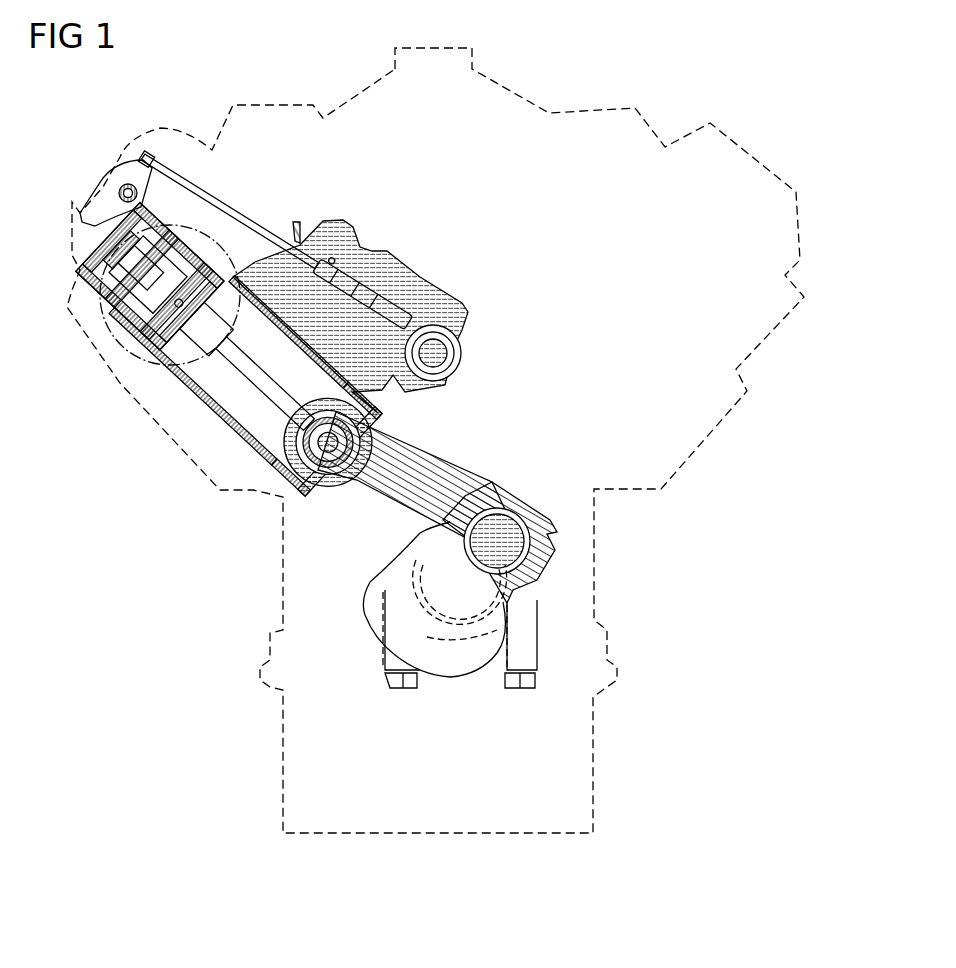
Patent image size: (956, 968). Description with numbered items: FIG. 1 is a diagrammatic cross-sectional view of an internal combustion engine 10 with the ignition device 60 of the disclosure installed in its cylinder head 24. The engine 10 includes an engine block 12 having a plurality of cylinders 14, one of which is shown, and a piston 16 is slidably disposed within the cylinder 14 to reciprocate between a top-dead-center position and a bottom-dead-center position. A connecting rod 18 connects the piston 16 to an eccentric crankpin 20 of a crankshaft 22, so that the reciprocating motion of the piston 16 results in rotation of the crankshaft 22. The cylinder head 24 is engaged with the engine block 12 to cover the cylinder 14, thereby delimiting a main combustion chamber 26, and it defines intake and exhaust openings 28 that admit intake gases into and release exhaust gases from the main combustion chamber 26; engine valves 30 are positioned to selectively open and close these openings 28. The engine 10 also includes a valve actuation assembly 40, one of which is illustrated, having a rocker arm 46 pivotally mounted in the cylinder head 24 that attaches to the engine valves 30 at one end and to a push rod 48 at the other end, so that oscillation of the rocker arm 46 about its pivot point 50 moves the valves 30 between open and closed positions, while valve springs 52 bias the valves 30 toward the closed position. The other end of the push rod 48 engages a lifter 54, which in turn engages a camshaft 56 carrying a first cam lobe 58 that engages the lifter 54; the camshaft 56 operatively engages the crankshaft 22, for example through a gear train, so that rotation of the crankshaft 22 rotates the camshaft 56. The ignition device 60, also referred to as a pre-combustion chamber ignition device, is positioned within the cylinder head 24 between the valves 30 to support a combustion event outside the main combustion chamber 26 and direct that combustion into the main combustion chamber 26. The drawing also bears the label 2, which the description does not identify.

The actuator assembly 2 is at (203, 232).
The internal combustion engine 10 is at (750, 100).
The engine block 12 is at (322, 222).
The cylinder 14 is at (214, 345).
The piston 16 is at (328, 441).
The connecting rod 18 is at (390, 488).
The eccentric crankpin 20 is at (497, 503).
The crankshaft 22 is at (390, 578).
The cylinder head 24 is at (150, 276).
The main combustion chamber 26 is at (245, 363).
The intake and exhaust openings 28 is at (251, 369).
The engine valves 30 is at (159, 285).
The valve actuation assembly 40 is at (300, 240).
The rocker arm 46 is at (105, 197).
The push rod 48 is at (229, 211).
The pivot point 50 is at (124, 186).
The valve springs 52 is at (112, 241).
The lifter 54 is at (365, 291).
The camshaft 56 is at (462, 356).
The first cam lobe 58 is at (425, 378).
The ignition device 60 is at (136, 263).